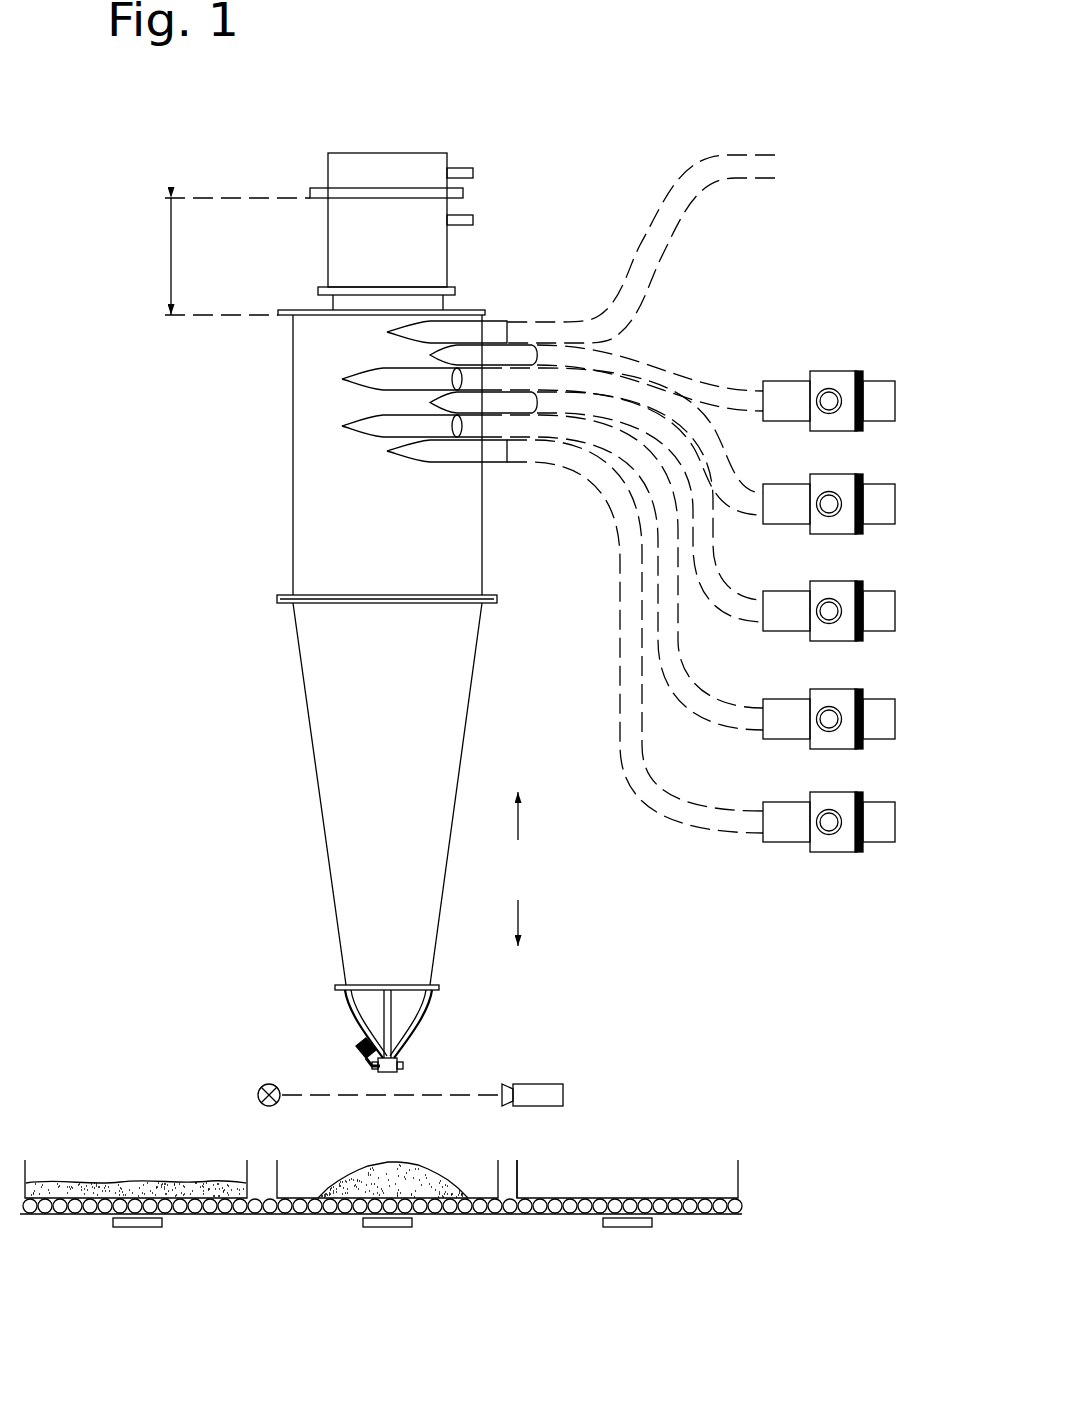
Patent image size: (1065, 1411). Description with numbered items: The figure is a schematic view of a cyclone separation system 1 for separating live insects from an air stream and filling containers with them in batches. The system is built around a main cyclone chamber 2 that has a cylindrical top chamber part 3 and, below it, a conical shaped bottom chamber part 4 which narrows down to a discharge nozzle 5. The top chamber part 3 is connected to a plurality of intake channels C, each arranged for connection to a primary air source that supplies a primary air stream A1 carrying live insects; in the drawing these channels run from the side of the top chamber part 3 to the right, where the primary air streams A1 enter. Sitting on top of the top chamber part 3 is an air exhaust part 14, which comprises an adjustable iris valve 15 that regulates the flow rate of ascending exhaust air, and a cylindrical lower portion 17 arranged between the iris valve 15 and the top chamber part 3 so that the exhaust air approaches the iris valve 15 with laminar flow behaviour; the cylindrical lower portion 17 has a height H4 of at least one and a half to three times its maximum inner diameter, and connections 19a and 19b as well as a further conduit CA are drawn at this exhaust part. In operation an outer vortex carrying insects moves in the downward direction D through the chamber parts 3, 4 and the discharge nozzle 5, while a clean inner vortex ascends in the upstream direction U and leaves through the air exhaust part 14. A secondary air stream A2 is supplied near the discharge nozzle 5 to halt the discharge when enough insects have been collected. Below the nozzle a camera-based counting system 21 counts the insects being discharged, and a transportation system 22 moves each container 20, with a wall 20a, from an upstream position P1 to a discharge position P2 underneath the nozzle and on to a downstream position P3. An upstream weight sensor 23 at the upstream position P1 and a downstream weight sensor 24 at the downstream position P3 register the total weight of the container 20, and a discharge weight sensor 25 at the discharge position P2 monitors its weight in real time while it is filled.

The cyclone separation system 1 is at (648, 70).
The main cyclone chamber 2 is at (217, 603).
The top chamber part 3 is at (306, 548).
The conical shaped bottom chamber part 4 is at (332, 763).
The discharge nozzle 5 is at (342, 1006).
The air exhaust part 14 is at (293, 217).
The adjustable iris valve 15 is at (462, 196).
The cylindrical lower portion 17 is at (332, 253).
The lower connection 19a is at (470, 223).
The upper connection 19b is at (466, 172).
The container 20 is at (27, 1170).
The tray wall 20a is at (499, 1170).
The camera-based counting system 21 is at (289, 1109).
The transportation system 22 is at (509, 1215).
The upstream weight sensor 23 is at (641, 1229).
The downstream weight sensor 24 is at (150, 1229).
The discharge weight sensor 25 is at (372, 1229).
The primary air stream A1 is at (940, 401).
The secondary air stream A2 is at (352, 1048).
The intake channel C is at (847, 597).
The main gas conduit CA is at (748, 168).
The height of the cylindrical lower portion H4 is at (170, 254).
The upstream direction U is at (517, 828).
The downward direction D is at (518, 909).
The upstream position P1 is at (713, 1262).
The discharge position P2 is at (449, 1250).
The downstream position P3 is at (206, 1252).